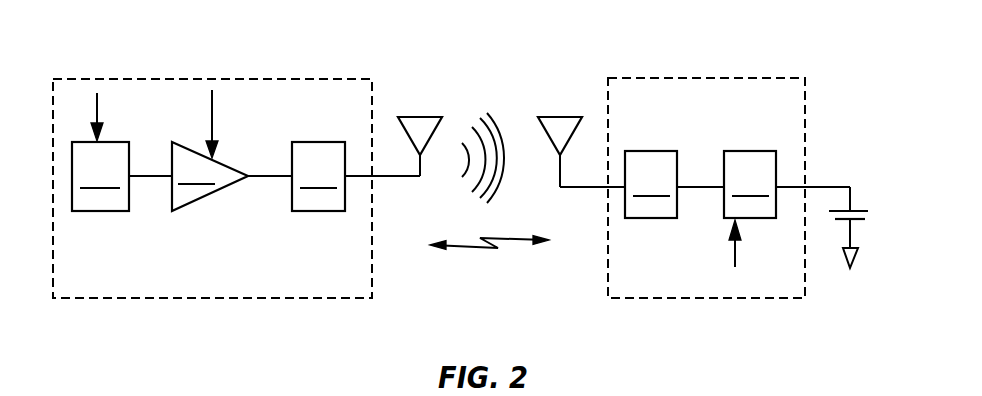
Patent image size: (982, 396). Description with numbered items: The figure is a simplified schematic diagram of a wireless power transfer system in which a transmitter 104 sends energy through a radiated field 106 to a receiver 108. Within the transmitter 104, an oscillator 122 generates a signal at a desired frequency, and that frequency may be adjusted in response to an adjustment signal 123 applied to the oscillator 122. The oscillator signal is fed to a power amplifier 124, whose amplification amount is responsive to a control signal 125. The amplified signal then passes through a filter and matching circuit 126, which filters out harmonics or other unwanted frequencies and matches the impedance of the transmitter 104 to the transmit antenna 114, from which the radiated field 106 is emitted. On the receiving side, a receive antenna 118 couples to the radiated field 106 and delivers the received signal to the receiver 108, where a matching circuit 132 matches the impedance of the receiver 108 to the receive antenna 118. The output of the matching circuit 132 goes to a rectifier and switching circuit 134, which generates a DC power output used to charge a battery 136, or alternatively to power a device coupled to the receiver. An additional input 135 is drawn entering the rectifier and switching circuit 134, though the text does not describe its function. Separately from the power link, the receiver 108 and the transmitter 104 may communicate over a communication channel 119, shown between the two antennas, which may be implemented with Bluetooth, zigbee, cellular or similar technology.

The transmitter 104 is at (195, 79).
The radiated field 106 is at (492, 186).
The receiver 108 is at (708, 78).
The transmit antenna 114 is at (418, 117).
The receive antenna 118 is at (565, 117).
The communication channel 119 is at (496, 249).
The oscillator 122 is at (122, 202).
The adjustment signal 123 is at (97, 110).
The power amplifier 124 is at (232, 202).
The control signal 125 is at (212, 117).
The filter and matching circuit 126 is at (354, 207).
The matching circuit 132 is at (674, 215).
The rectifier and switching circuit 134 is at (787, 184).
The rectifier switching control input 135 is at (735, 247).
The battery 136 is at (857, 208).